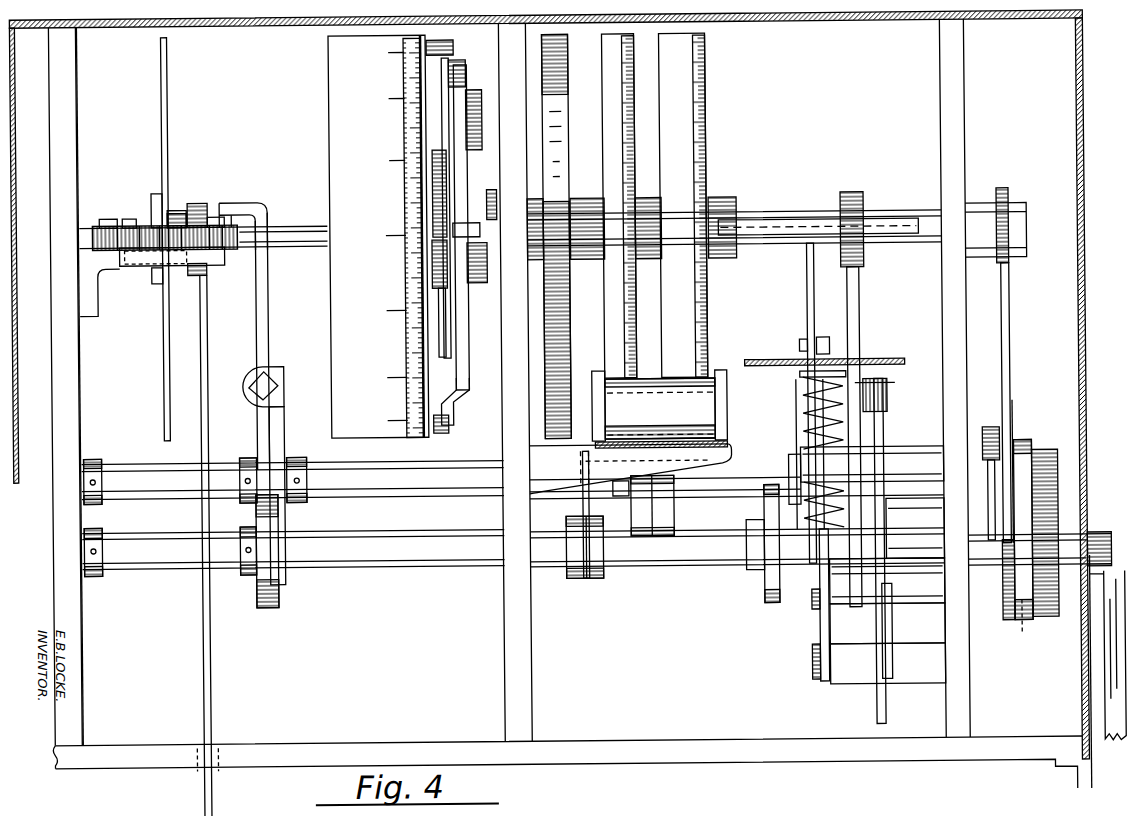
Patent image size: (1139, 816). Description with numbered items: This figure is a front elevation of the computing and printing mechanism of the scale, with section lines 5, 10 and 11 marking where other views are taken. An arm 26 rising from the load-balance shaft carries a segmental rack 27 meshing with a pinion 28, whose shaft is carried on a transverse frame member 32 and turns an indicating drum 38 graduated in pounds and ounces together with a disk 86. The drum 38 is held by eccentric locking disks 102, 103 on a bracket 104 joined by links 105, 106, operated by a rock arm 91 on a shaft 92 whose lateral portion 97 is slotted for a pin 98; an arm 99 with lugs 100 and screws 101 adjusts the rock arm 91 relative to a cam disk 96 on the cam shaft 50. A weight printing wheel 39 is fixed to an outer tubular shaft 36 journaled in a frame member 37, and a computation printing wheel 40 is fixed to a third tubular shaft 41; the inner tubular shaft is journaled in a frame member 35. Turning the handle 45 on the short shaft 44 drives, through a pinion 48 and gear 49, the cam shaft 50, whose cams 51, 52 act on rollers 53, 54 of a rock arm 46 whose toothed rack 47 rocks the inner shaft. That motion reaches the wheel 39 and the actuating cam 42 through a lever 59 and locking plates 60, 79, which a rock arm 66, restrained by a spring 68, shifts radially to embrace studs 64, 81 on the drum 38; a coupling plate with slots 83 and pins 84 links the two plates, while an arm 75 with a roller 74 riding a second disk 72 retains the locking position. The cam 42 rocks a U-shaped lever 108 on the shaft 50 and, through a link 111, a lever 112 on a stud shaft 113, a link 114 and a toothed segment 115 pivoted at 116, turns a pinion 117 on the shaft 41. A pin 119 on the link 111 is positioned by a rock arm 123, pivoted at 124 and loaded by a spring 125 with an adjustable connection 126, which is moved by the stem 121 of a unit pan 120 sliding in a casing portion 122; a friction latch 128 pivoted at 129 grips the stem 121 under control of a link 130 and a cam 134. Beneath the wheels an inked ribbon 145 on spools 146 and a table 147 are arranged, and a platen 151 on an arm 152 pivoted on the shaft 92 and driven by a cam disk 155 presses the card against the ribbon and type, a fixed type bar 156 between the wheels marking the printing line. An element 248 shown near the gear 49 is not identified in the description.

The section line 5— 5 is at (1052, 232).
The section line 10— 10 is at (308, 580).
The section line 11— 11 is at (494, 100).
The arm 26 is at (206, 368).
The segmental rack 27 is at (208, 272).
The pinion 28 is at (205, 205).
The transverse frame member 32 is at (68, 125).
The frame member 35 is at (943, 142).
The outer tubular shaft 36 is at (492, 205).
The frame member 37 is at (502, 650).
The indicating drum 38 is at (328, 116).
The weight printing wheel 39 is at (604, 206).
The computation printing wheel 40 is at (705, 142).
The third tubular shaft 41 is at (797, 212).
The actuating device 42 is at (561, 120).
The short shaft 44 is at (1050, 618).
The operating handle 45 is at (1105, 675).
The rock arm 46 is at (1010, 352).
The segmental toothed rack 47 is at (1010, 290).
The pinion 48 is at (1004, 188).
The gear 49 is at (1058, 456).
The cam shaft 50 is at (162, 563).
The cam 51 is at (990, 490).
The cam 52 is at (1022, 440).
The roller 53 is at (988, 426).
The roller 54 is at (1008, 622).
The lever 59 is at (462, 160).
The locking plate 60 is at (444, 98).
The stud 64 is at (428, 48).
The rock arm 66 is at (468, 76).
The spring 68 is at (483, 130).
The second disk 72 is at (441, 248).
The roller 74 is at (434, 178).
The arm 75 is at (436, 158).
The second locking plate 79 is at (447, 405).
The second stud 81 is at (436, 436).
The slots 83 is at (487, 258).
The pins 84 is at (480, 232).
The disk 86 is at (169, 165).
The rock arm 91 is at (256, 311).
The shaft 92 is at (134, 463).
The cam disk 96 is at (254, 600).
The laterally extending portion 97 is at (262, 208).
The pin 98 is at (232, 203).
The arm 99 is at (268, 433).
The lugs 100 is at (247, 391).
The screws 101 is at (265, 372).
The eccentric locking disk 102 is at (226, 258).
The eccentric locking disk 103 is at (92, 225).
The bracket 104 is at (112, 268).
The link 105 is at (180, 213).
The link 106 is at (110, 218).
The rock arm 108 is at (588, 258).
The link 111 is at (890, 624).
The lever 112 is at (883, 429).
The stud shaft 113 is at (915, 528).
The link 114 is at (888, 396).
The toothed segment 115 is at (860, 285).
The pivot 116 is at (887, 581).
The pinion 117 is at (853, 193).
The pin 119 is at (887, 623).
The unit pan 120 is at (758, 220).
The stem 121 is at (808, 313).
The forwardly extending casing portion 122 is at (765, 360).
The rock arm 123 is at (818, 634).
The pivot 124 is at (887, 663).
The spring 125 is at (800, 412).
The adjustable connection 126 is at (825, 338).
The friction latch 128 is at (803, 443).
The pivot 129 is at (871, 464).
The link 130 is at (784, 482).
The cam 134 is at (763, 600).
The inked ribbon 145 is at (578, 452).
The spools 146 is at (676, 378).
The table 147 is at (728, 444).
The platen 151 is at (645, 468).
The platen arm 152 is at (673, 505).
The cam disk 155 is at (620, 495).
The type bar 156 is at (660, 405).
The gear 248 is at (1026, 622).